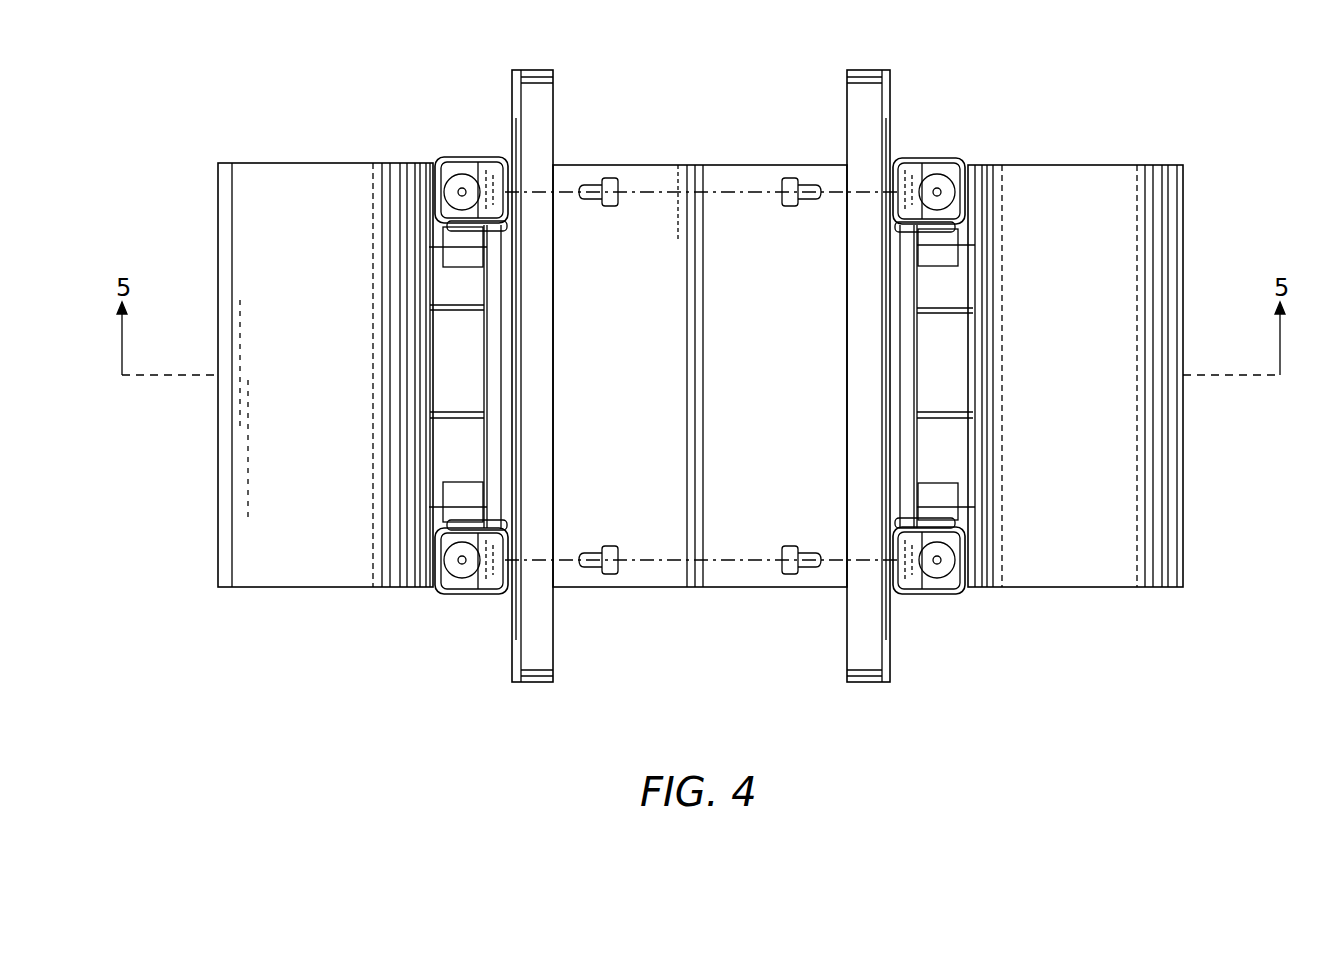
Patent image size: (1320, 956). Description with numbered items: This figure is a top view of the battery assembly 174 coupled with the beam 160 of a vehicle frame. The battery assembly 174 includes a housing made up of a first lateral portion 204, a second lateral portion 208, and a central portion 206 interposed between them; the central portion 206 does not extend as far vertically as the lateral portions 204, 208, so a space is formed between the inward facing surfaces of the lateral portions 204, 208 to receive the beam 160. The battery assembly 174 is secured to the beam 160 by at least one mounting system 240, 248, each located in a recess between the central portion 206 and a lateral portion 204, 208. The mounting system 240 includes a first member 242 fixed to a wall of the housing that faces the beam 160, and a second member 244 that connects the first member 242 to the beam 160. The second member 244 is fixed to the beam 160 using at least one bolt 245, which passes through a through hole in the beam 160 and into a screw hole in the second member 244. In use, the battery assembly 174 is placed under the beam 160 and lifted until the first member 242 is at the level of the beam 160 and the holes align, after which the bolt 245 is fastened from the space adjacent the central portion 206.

The battery assembly 174 is at (698, 372).
The beam 160 is at (843, 104).
The first lateral portion 204 is at (252, 207).
The central portion 206 is at (650, 175).
The second lateral portion 208 is at (1140, 208).
The mounting system 240 is at (928, 604).
The first member 242 is at (955, 156).
The second member 244 is at (903, 178).
The bolt 245 is at (806, 566).
The mounting system 248 is at (466, 145).